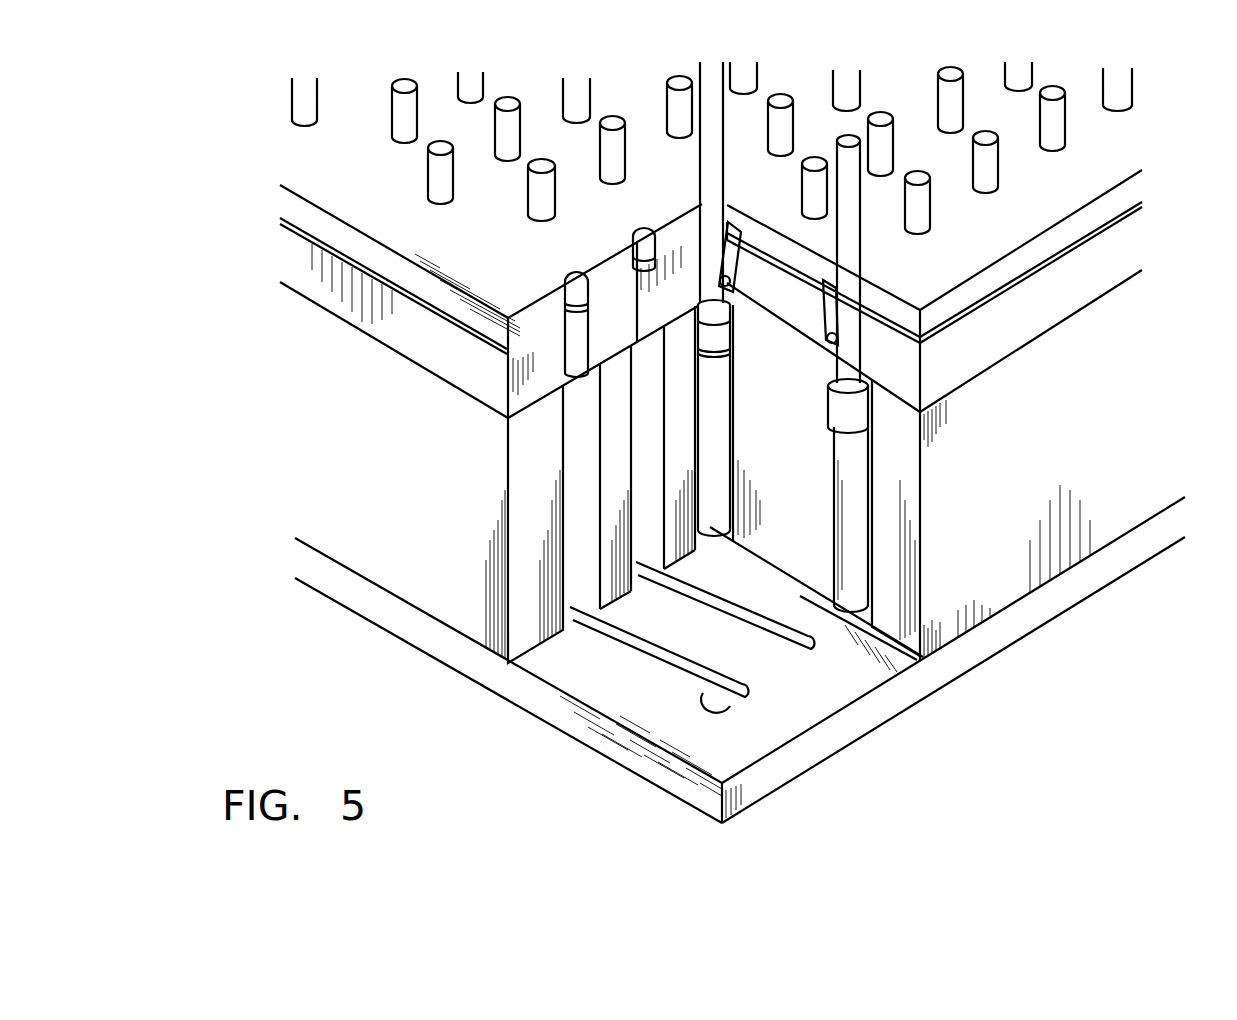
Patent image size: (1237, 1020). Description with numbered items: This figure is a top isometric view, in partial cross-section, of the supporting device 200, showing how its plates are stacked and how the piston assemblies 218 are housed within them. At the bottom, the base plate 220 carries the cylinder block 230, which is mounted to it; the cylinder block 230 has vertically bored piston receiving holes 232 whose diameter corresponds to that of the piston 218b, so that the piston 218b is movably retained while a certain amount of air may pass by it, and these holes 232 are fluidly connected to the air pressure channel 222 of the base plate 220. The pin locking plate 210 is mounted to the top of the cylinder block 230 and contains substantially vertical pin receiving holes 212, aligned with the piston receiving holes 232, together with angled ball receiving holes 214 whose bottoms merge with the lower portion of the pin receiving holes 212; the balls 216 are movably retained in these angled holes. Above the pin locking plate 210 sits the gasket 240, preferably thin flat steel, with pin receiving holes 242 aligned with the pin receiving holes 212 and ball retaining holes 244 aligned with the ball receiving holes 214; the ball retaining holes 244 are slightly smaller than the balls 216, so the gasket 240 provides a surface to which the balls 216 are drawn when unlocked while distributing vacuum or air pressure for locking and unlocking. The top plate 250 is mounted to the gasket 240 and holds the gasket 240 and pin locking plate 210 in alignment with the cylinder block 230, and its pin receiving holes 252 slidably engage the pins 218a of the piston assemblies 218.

The supporting device 200 is at (1020, 680).
The pin locking plate 210 is at (955, 362).
The pin receiving holes 212 is at (661, 208).
The ball receiving holes 214 is at (873, 312).
The balls 216 is at (725, 283).
The piston assemblies 218 is at (826, 384).
The pin 218a is at (868, 352).
The piston 218b is at (830, 417).
The base plate 220 is at (900, 700).
The air pressure channel 222 is at (750, 693).
The cylinder block 230 is at (405, 563).
The piston receiving holes 232 is at (585, 612).
The gasket 240 is at (997, 293).
The pin receiving holes 242 is at (632, 241).
The ball retaining holes 244 is at (823, 275).
The top plate 250 is at (1100, 225).
The pin receiving holes 252 is at (997, 197).